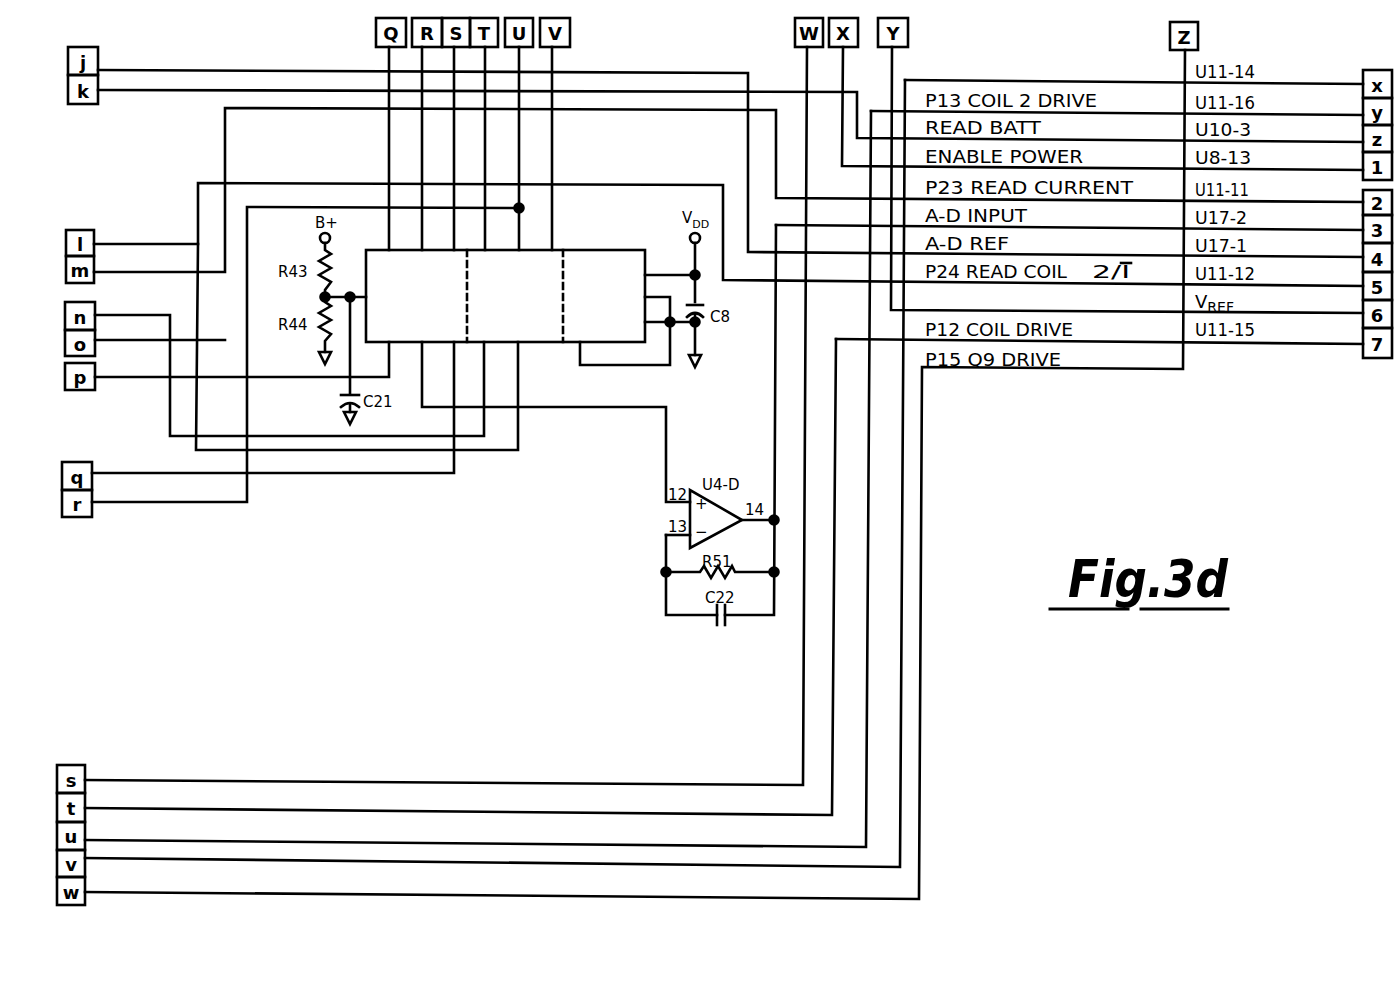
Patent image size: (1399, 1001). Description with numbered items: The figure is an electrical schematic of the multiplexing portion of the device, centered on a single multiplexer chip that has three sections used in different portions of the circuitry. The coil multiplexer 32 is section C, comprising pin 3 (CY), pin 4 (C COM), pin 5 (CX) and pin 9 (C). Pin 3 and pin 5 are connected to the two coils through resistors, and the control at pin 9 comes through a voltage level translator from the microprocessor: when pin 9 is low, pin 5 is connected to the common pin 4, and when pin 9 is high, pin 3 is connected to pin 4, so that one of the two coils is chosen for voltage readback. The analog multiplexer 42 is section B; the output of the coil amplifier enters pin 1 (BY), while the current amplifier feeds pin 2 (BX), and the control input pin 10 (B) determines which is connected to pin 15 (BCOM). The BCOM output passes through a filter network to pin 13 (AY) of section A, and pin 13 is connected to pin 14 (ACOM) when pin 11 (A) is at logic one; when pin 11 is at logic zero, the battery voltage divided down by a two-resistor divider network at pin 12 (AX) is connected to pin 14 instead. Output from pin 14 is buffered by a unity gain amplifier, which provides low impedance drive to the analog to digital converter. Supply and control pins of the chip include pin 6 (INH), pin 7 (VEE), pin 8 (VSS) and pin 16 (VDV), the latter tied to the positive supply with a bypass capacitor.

The analog multiplexer 42 is at (366, 257).
The coil multiplexer 32 is at (556, 250).
The pin 1 (BY) 1 is at (447, 148).
The pin 2 (BX) 2 is at (273, 407).
The pin 3 (CY) 3 is at (514, 148).
The pin 4 (C COM) 4 is at (545, 148).
The pin 5 (CX) 5 is at (478, 148).
The pin 6 (INH) 6 is at (657, 301).
The pin 7 (VEE) 7 is at (670, 314).
The pin 8 (VSS) 8 is at (623, 343).
The pin 9 (C) 9 is at (357, 347).
The pin 10 (B) 10 is at (289, 375).
The pin 11 (A) 11 is at (242, 359).
The pin 12 (AX) 12 is at (345, 286).
The pin 13 (AY) 13 is at (378, 148).
The pin 14 (ACOM) 14 is at (545, 422).
The pin 15 (BCOM) 15 is at (411, 148).
The pin 16 (VDV) 16 is at (670, 266).